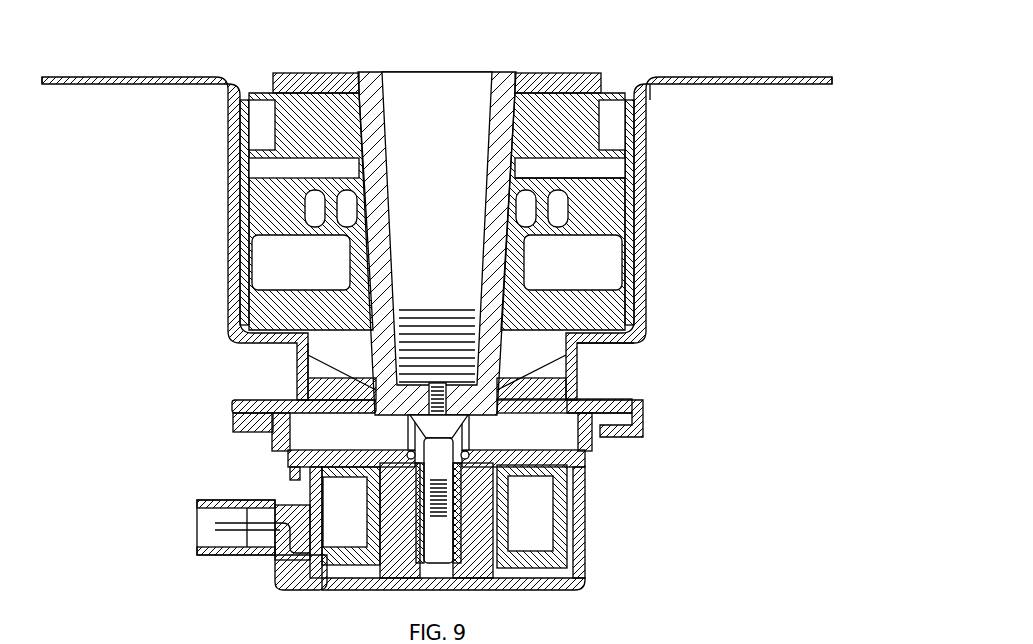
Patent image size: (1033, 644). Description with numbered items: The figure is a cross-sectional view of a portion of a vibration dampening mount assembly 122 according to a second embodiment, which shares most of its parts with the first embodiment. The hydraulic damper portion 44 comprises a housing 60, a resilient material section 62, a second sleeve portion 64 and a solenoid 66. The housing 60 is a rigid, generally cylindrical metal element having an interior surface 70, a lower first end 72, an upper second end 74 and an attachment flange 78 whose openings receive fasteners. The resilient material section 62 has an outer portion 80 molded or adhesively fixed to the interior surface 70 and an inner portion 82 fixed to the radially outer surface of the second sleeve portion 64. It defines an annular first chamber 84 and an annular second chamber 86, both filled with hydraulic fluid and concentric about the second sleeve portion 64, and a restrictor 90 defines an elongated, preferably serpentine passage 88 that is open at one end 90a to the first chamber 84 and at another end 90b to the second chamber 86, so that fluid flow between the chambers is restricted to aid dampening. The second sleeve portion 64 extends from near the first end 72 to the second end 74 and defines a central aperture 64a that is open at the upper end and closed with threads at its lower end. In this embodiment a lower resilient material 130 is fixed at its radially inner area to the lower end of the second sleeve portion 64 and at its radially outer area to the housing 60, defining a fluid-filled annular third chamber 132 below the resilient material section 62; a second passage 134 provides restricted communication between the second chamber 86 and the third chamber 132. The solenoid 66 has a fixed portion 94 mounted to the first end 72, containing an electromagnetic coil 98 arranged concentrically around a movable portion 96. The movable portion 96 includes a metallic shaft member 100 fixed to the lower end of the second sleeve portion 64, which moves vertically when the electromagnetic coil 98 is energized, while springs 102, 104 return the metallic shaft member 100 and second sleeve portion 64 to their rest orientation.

The vibration dampening mount assembly 122 is at (697, 32).
The attachment flange 78 is at (66, 86).
The second end 74 is at (649, 100).
The hydraulic damper portion 44 is at (218, 263).
The housing 60 is at (648, 196).
The resilient material section 62 is at (249, 198).
The outer portion 80 is at (240, 226).
The inner portion 82 is at (378, 197).
The first chamber 84 is at (607, 171).
The second chamber 86 is at (600, 253).
The passage 88 is at (517, 158).
The restrictor 90 is at (528, 227).
The one end 90a is at (312, 190).
The another end 90b is at (558, 227).
The second sleeve portion 64 is at (437, 243).
The central aperture 64a is at (487, 135).
The interior surface 70 is at (630, 281).
The second passage 134 is at (634, 321).
The third chamber 132 is at (333, 367).
The lower resilient material 130 is at (293, 400).
The metallic shaft member 100 is at (440, 437).
The spring 102 is at (410, 432).
The movable portion 96 is at (490, 425).
The first end 72 is at (623, 437).
The solenoid 66 is at (602, 497).
The electromagnetic coil 98 is at (530, 532).
The spring 104 is at (362, 537).
The fixed portion 94 is at (277, 476).